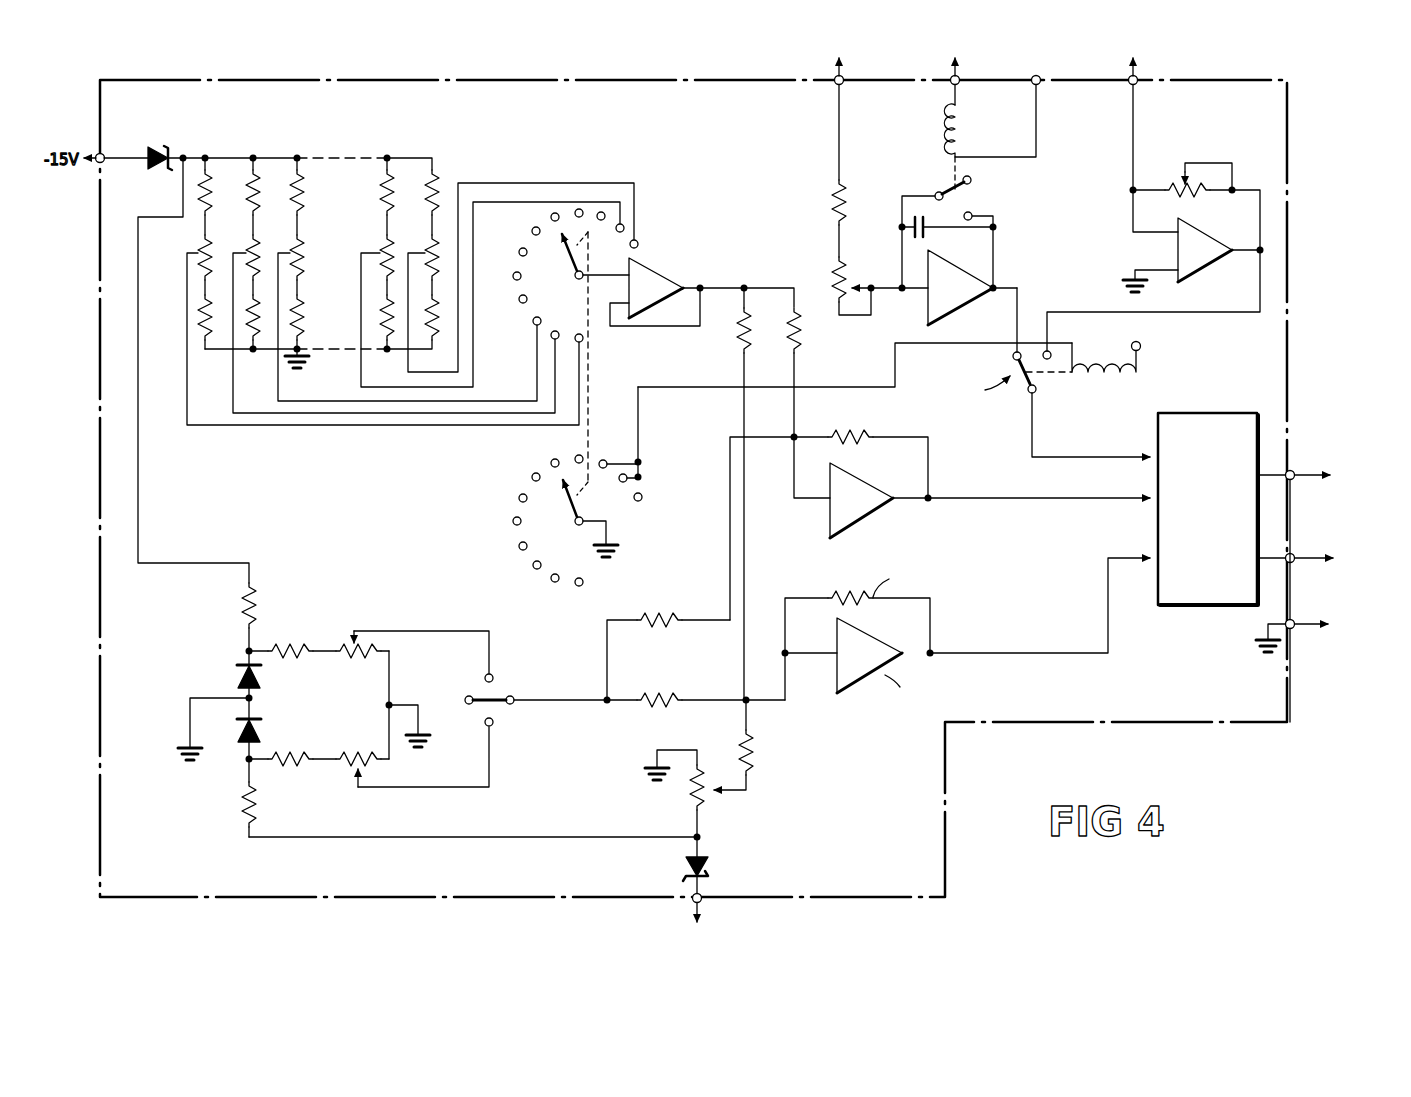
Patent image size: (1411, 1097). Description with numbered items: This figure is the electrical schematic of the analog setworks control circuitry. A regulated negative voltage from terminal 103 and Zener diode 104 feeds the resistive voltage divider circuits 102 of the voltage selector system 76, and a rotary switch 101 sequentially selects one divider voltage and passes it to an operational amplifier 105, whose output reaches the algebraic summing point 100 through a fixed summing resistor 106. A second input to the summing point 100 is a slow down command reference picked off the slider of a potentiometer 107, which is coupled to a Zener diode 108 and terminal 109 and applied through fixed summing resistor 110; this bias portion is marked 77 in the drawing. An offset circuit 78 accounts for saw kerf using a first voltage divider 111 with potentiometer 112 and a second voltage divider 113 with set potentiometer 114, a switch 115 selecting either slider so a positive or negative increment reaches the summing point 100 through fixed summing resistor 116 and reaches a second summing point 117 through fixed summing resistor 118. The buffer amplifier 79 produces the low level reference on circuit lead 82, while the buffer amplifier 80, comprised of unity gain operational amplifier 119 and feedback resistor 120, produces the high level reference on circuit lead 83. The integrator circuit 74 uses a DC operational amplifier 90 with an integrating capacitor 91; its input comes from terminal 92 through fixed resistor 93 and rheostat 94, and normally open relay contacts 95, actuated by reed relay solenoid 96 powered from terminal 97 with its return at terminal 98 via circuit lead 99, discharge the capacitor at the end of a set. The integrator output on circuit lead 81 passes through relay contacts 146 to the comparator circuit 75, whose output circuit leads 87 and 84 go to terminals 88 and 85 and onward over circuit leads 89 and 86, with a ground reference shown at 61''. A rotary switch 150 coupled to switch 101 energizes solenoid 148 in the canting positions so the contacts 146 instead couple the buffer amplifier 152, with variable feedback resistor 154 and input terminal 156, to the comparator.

The terminal 103 is at (103, 163).
The Zener diode 104 is at (172, 152).
The resistive voltage divider circuits 102 is at (352, 240).
The voltage selector system 76 is at (398, 456).
The rotary switch 101 is at (523, 322).
The operational amplifier 105 is at (670, 274).
The fixed summing resistor 106 is at (741, 342).
The second summing point 117 is at (796, 432).
The feedback resistor 120 is at (850, 430).
The buffer amplifier 80 is at (881, 500).
The unity gain operational amplifier 119 is at (878, 513).
The circuit lead 83 is at (1025, 504).
The buffer amplifier 79 is at (920, 636).
The circuit lead 82 is at (1043, 660).
The comparator circuit 75 is at (1215, 413).
The relay contacts 146 is at (1047, 350).
The solenoid 148 is at (1077, 368).
The terminal 156 is at (1137, 86).
The variable feedback resistor 154 is at (1182, 175).
The buffer amplifier 152 is at (1213, 238).
The terminal 92 is at (835, 86).
The fixed resistor 93 is at (846, 200).
The rheostat 94 is at (853, 292).
The terminal 97 is at (960, 88).
The reed relay solenoid 96 is at (962, 128).
The terminal 98 is at (1040, 87).
The circuit lead 99 is at (1042, 74).
The integrator circuit 74 is at (987, 259).
The relay contacts 95 is at (975, 195).
The integrating capacitor 91 is at (928, 233).
The DC operational amplifier 90 is at (970, 305).
The circuit lead 81 is at (1020, 303).
The output circuit lead 87 is at (1265, 472).
The terminal 88 is at (1294, 470).
The circuit lead 89 is at (1316, 480).
The output circuit lead 84 is at (1265, 555).
The output terminal 85 is at (1294, 553).
The circuit lead 86 is at (1330, 565).
The ground terminal to FIG. 2 61'' is at (1333, 601).
The offset circuit 78 is at (325, 722).
The first voltage divider 111 is at (327, 638).
The potentiometer 112 is at (355, 662).
The second voltage divider 113 is at (324, 774).
The set potentiometer 114 is at (360, 765).
The switch 115 is at (517, 686).
The fixed summing resistor 116 is at (676, 694).
The fixed summing resistor 118 is at (672, 618).
The algebraic summing point 100 is at (750, 705).
The fixed summing resistor 110 is at (760, 754).
The potentiometer 107 is at (690, 787).
The bias circuit 77 is at (783, 832).
The Zener diode 108 is at (683, 865).
The terminal 109 is at (704, 895).
The rotary switch 150 is at (510, 539).